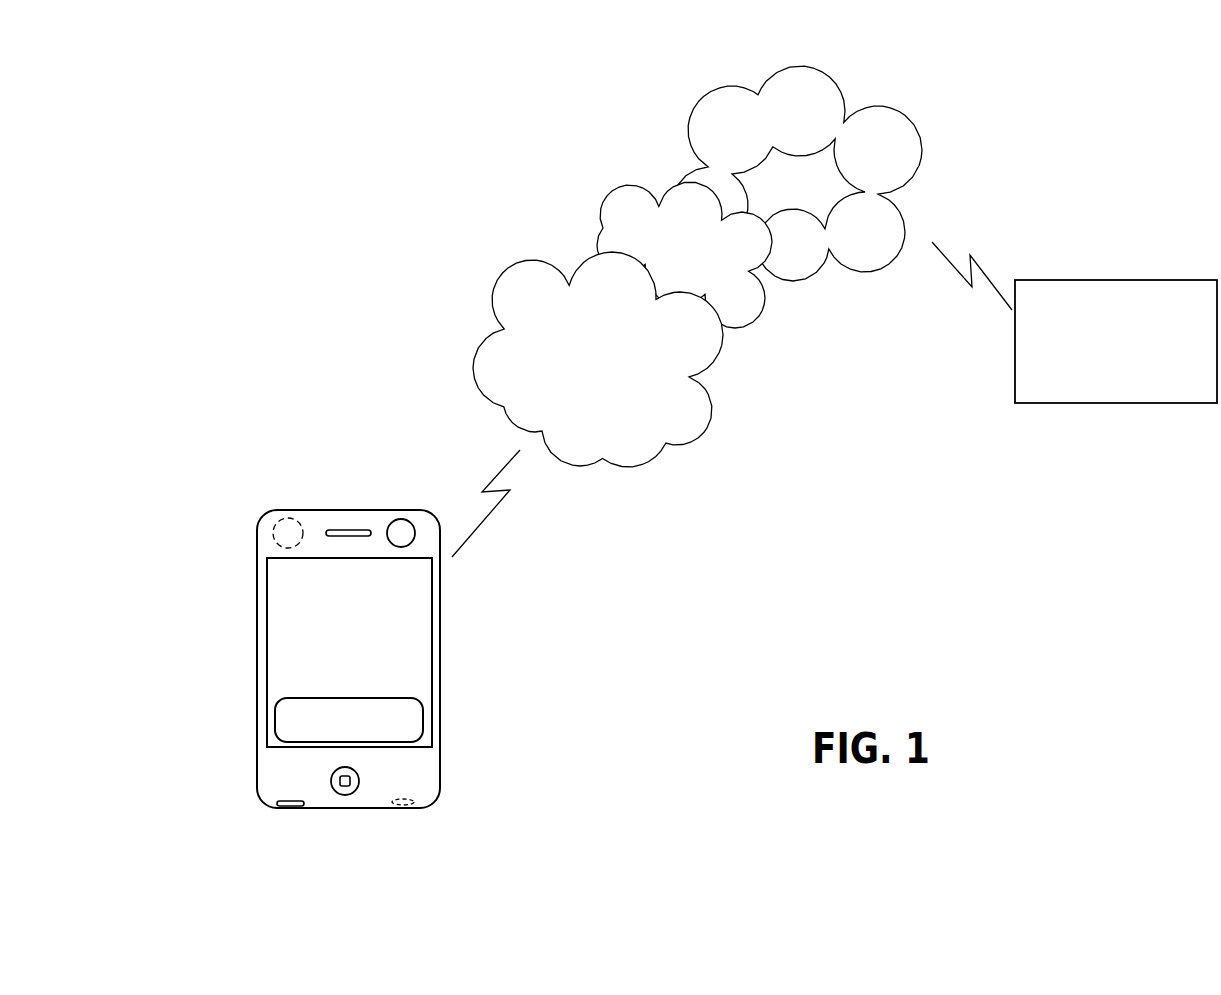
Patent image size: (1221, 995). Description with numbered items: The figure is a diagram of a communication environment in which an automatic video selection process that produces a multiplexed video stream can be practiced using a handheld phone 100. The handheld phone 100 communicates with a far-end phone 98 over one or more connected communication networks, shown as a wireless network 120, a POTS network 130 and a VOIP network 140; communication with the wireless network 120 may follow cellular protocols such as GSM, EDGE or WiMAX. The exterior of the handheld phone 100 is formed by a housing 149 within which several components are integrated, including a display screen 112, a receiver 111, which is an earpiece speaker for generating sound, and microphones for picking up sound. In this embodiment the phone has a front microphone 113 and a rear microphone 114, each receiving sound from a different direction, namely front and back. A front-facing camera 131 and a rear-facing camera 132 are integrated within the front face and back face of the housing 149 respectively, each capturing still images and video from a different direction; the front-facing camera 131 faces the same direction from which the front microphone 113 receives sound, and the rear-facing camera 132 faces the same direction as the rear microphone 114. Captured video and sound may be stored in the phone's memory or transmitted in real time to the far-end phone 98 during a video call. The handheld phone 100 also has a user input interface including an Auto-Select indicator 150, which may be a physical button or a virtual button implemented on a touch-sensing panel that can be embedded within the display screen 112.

The far-end phone 98 is at (1101, 390).
The handheld phone 100 is at (352, 609).
The receiver 111 is at (341, 528).
The display screen 112 is at (440, 600).
The front microphone 113 is at (283, 801).
The rear microphone 114 is at (484, 757).
The wireless network 120 is at (581, 402).
The POTS network 130 is at (667, 277).
The front-facing camera 131 is at (405, 521).
The rear-facing camera 132 is at (280, 538).
The VOIP network 140 is at (780, 209).
The housing 149 is at (277, 593).
The Auto-Select indicator 150 is at (423, 700).